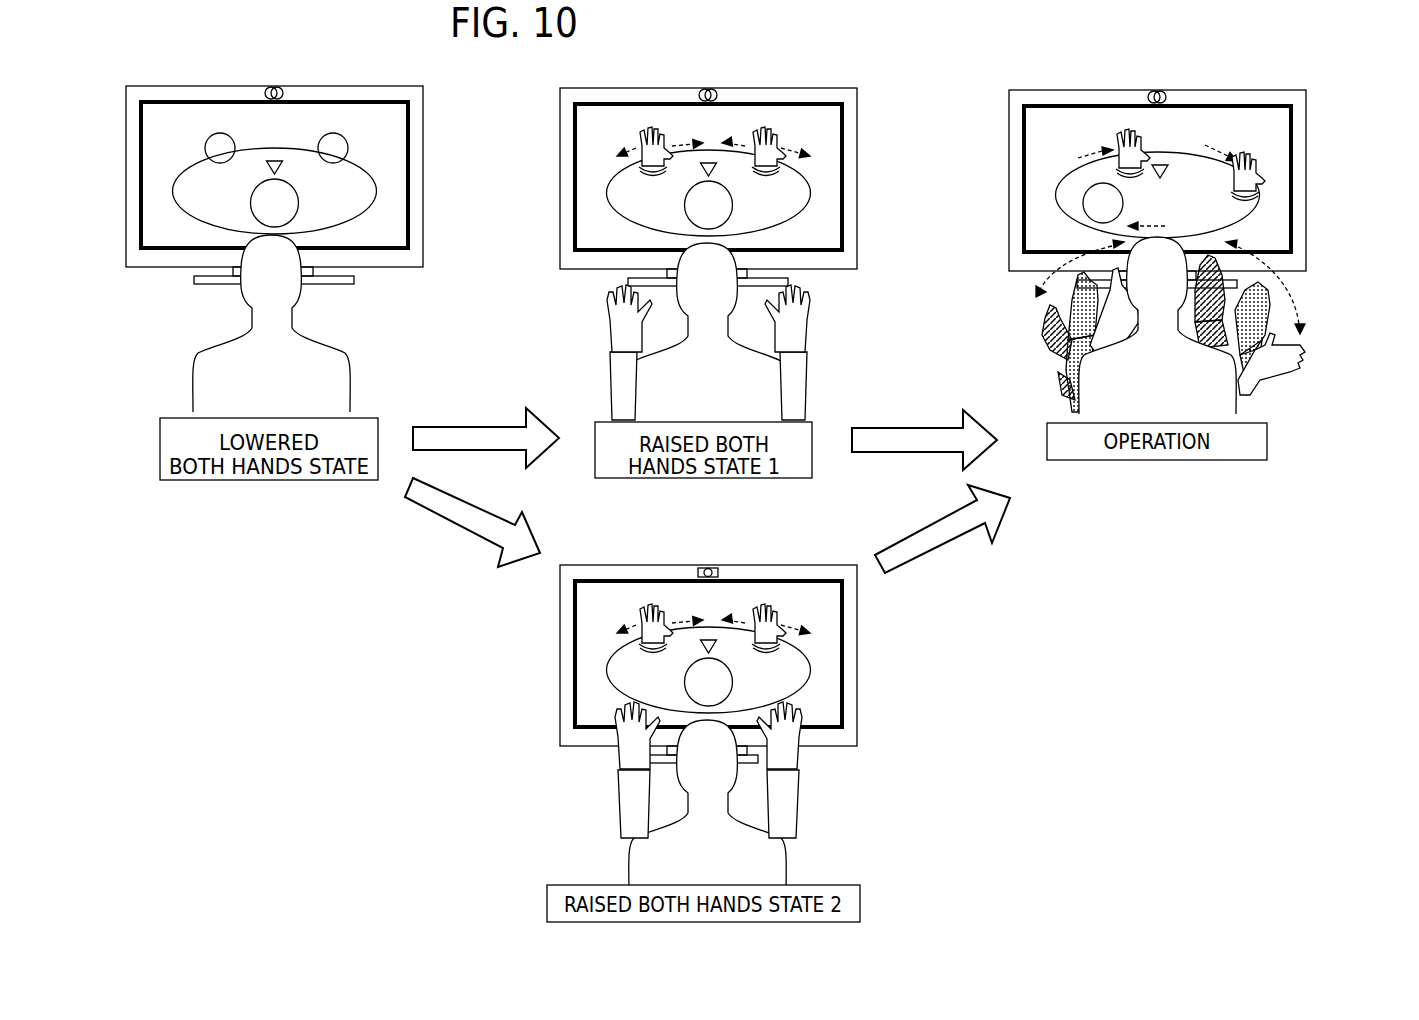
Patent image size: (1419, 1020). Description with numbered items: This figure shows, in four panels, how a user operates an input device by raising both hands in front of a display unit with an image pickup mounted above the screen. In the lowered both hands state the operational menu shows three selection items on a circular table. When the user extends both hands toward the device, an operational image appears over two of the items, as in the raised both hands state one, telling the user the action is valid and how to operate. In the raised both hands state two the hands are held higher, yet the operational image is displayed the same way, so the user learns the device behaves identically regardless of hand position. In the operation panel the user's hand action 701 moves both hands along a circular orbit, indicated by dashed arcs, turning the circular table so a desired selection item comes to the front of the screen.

The user's hand action 701 is at (1290, 283).